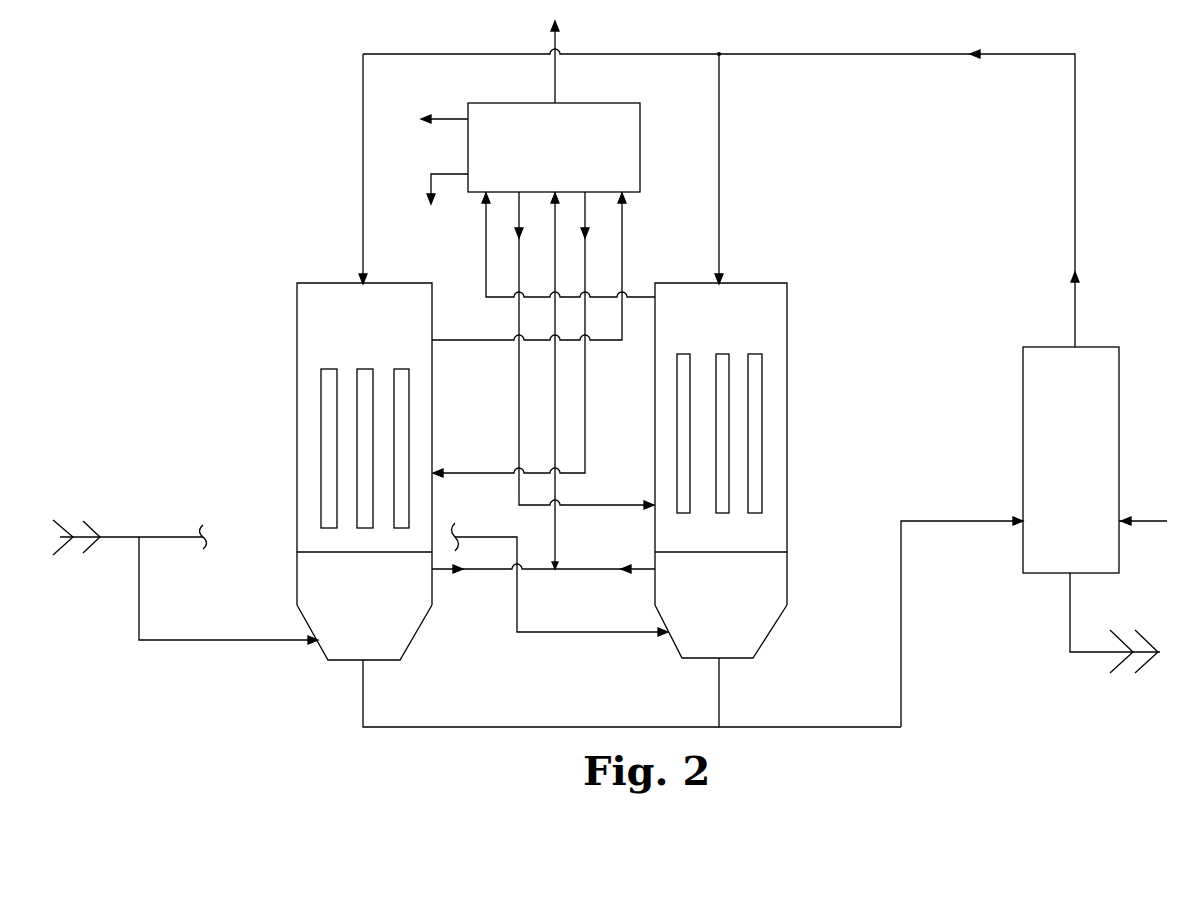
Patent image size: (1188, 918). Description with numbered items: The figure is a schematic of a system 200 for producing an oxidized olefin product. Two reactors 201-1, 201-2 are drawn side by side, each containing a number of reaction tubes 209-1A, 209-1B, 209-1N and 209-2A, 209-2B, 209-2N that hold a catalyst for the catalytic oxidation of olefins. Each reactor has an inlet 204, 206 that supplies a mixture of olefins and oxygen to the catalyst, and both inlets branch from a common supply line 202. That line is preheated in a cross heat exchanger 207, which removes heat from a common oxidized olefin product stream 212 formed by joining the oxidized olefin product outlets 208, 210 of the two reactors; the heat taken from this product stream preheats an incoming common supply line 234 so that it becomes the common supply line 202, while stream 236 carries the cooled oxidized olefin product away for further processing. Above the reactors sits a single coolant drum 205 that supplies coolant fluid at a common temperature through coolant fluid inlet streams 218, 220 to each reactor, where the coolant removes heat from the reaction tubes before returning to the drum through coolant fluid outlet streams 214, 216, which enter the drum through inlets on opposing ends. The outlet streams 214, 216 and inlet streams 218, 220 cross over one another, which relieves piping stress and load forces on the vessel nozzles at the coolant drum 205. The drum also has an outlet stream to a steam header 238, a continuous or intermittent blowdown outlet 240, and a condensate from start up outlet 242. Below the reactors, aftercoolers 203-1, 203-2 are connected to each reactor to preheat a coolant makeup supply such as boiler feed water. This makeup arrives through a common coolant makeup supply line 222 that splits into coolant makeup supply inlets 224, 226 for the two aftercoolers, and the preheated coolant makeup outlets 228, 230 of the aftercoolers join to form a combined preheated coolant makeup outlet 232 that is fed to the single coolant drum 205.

The system 200 is at (168, 122).
The reactor 201-1 is at (341, 311).
The reactor 201-2 is at (697, 311).
The common supply line 202 is at (1075, 178).
The aftercooler 203-1 is at (341, 589).
The aftercooler 203-2 is at (697, 589).
The inlet 204 is at (363, 158).
The single coolant drum 205 is at (538, 142).
The inlet 206 is at (719, 178).
The cross heat exchanger 207 is at (1055, 384).
The oxidized olefin product outlet 208 is at (420, 727).
The reaction tube 209-1A is at (321, 398).
The reaction tube 209-1B is at (358, 369).
The reaction tube 209-1N is at (409, 397).
The reaction tube 209-2A is at (677, 390).
The reaction tube 209-2B is at (721, 355).
The reaction tube 209-2N is at (762, 370).
The oxidized olefin product outlet 210 is at (719, 685).
The common oxidized olefin product stream 212 is at (902, 620).
The coolant fluid outlet stream 214 is at (622, 232).
The coolant fluid outlet stream 216 is at (486, 248).
The coolant fluid inlet stream 218 is at (585, 430).
The coolant fluid inlet stream 220 is at (519, 423).
The common coolant makeup supply line 222 is at (97, 535).
The coolant makeup supply inlet 224 is at (215, 642).
The coolant makeup supply inlet 226 is at (553, 633).
The preheated coolant makeup outlet 228 is at (490, 572).
The preheated coolant makeup outlet 230 is at (592, 572).
The preheated coolant makeup outlet 232 is at (555, 531).
The common supply line 234 is at (1152, 520).
The stream 236 is at (1070, 620).
The outlet stream to steam header 238 is at (555, 80).
The continuous/intermittent blowdown outlet 240 is at (453, 117).
The condensate from start up outlet 242 is at (443, 172).